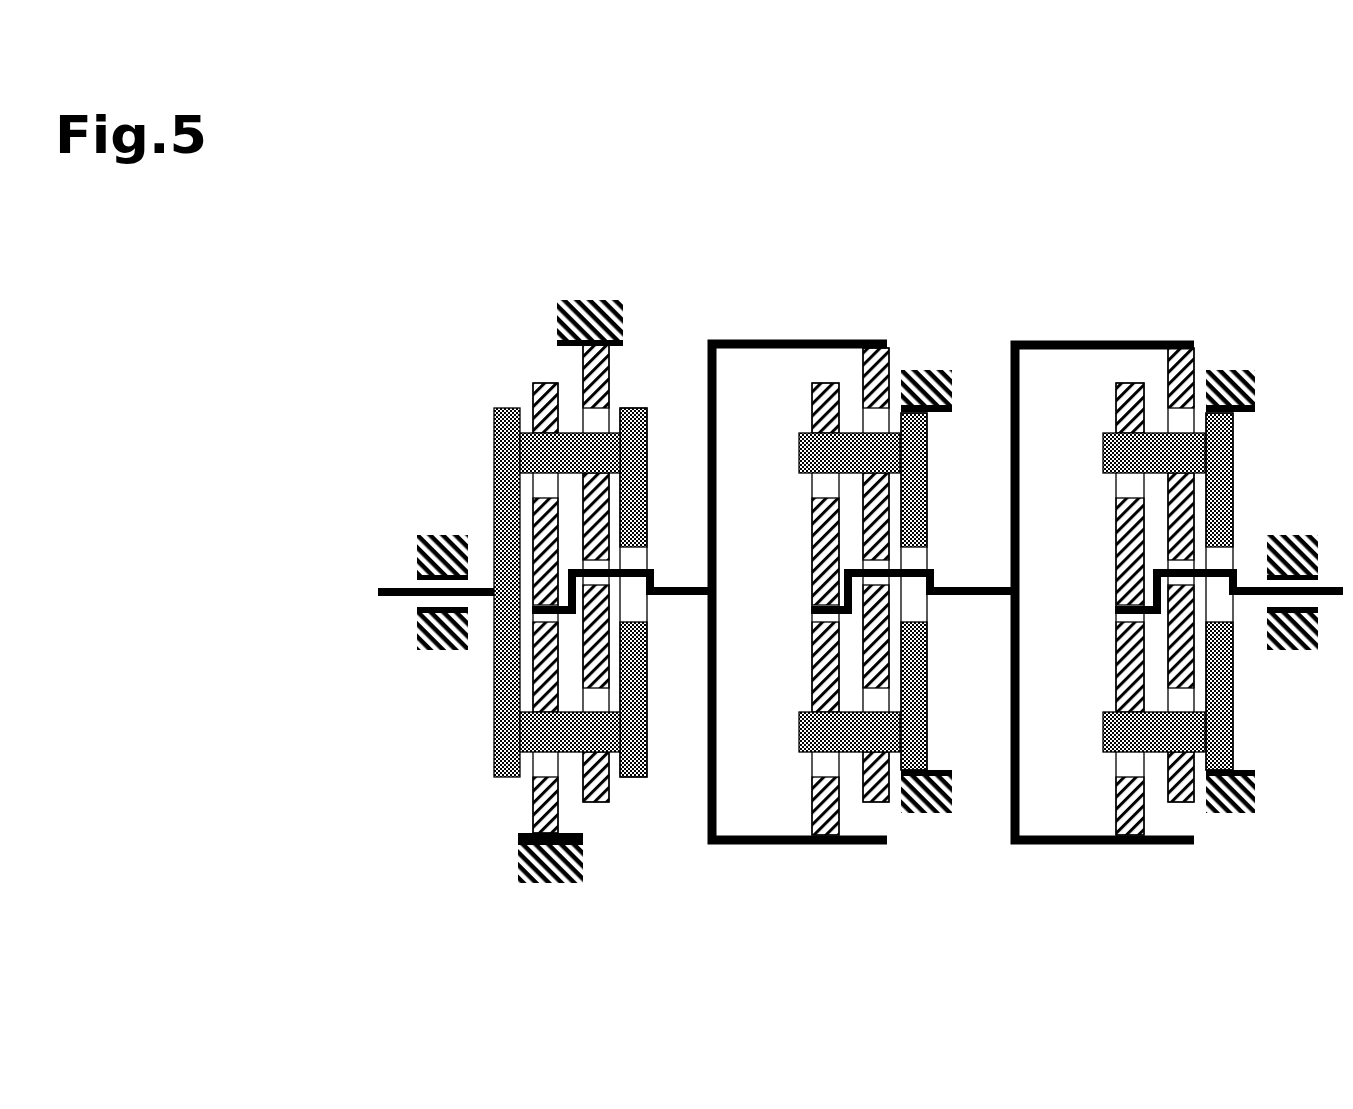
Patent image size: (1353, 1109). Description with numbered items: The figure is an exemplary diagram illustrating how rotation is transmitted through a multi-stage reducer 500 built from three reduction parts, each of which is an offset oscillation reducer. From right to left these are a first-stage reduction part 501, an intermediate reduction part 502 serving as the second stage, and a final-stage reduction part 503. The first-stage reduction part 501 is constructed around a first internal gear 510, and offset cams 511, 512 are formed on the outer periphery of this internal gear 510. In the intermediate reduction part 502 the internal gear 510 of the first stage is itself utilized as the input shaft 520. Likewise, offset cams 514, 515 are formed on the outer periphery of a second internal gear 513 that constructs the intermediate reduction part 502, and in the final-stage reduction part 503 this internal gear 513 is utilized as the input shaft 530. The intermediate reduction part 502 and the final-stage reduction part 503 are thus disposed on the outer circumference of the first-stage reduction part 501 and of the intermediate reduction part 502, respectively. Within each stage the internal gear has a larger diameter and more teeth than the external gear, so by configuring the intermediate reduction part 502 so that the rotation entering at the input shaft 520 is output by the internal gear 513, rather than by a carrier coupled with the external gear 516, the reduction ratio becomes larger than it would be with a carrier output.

The reducer 500 is at (1295, 287).
The first-stage reduction part 501 is at (1315, 890).
The intermediate reduction part 502 is at (960, 890).
The final-stage reduction part 503 is at (645, 890).
The first internal gear 510 is at (1088, 340).
The input shaft 520 is at (1104, 592).
The offset cam 511 is at (812, 632).
The offset cam 512 is at (893, 560).
The second internal gear 513 is at (787, 340).
The input shaft 530 is at (799, 592).
The offset cam 514 is at (538, 640).
The offset cam 515 is at (620, 563).
The external gear 516 is at (829, 383).